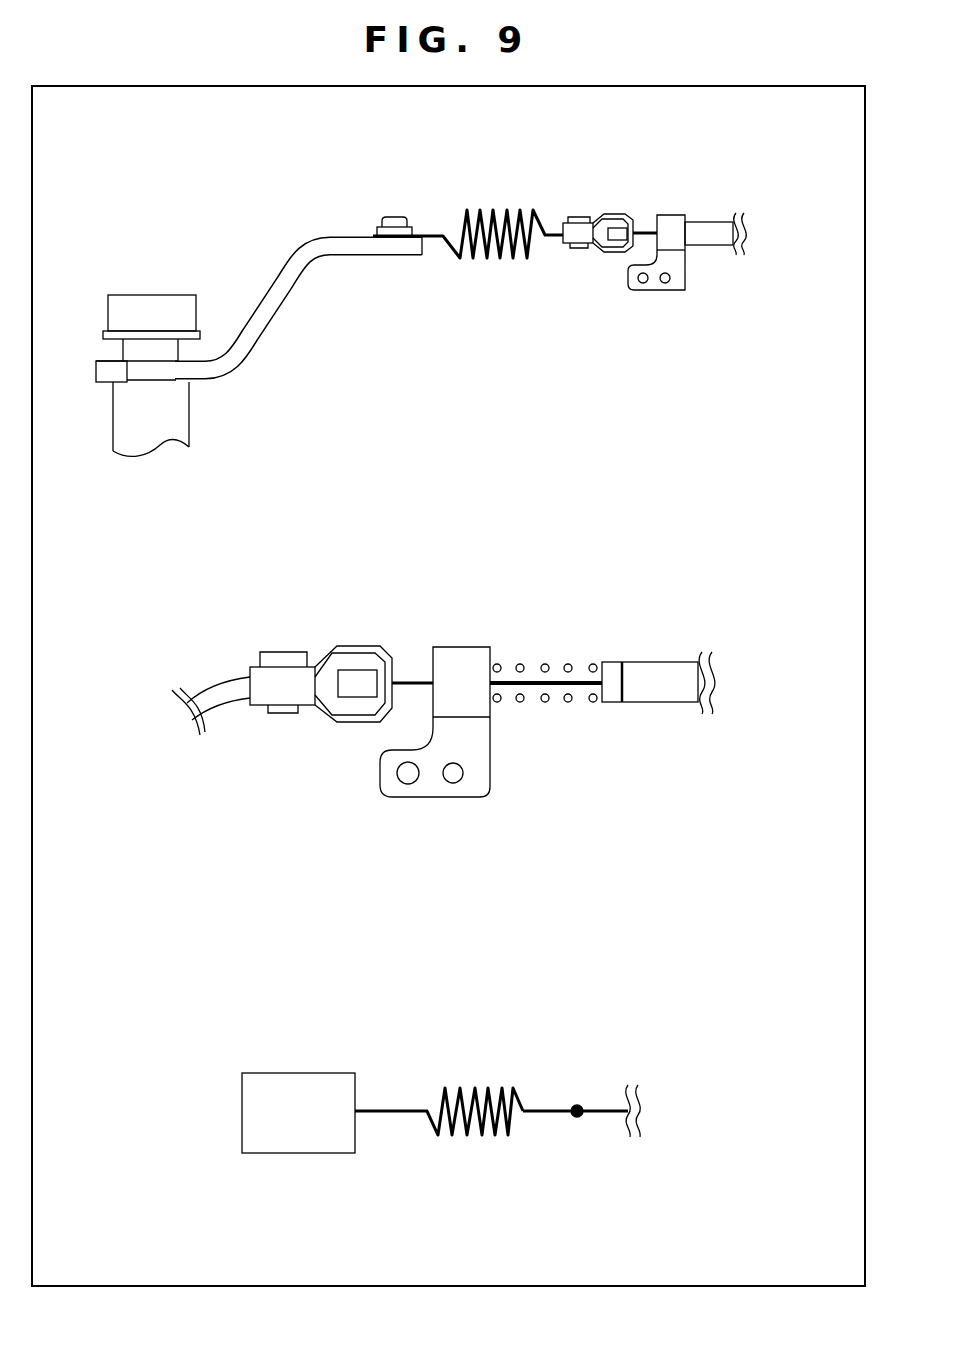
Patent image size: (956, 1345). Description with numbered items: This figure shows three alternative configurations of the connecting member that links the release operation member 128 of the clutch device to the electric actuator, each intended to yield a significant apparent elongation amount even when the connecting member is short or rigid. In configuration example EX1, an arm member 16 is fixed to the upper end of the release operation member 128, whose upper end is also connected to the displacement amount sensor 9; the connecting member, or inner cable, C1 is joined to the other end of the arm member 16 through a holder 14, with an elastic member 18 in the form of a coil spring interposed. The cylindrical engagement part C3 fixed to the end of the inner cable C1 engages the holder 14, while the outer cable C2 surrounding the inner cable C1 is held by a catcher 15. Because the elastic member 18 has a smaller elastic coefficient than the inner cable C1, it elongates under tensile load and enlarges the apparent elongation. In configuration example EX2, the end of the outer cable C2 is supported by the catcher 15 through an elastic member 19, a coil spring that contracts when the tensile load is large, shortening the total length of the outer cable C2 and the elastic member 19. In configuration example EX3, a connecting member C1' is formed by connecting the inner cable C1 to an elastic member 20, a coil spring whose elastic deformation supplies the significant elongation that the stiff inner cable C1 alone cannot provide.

The displacement amount sensor 9 is at (153, 295).
The arm member 16 is at (272, 304).
The release operation member 128 is at (190, 433).
The elastic member 18 is at (493, 211).
The holder 14 is at (605, 213).
The engagement part C3 is at (620, 240).
The connecting member C1 is at (526, 641).
The outer cable C2 is at (708, 222).
The catcher 15 is at (688, 258).
The elastic member 19 is at (517, 662).
The elastic member 20 is at (478, 1136).
The connecting member C1' is at (550, 1035).
The configuration example EX1 is at (632, 355).
The configuration example EX2 is at (642, 768).
The configuration example EX3 is at (610, 1147).